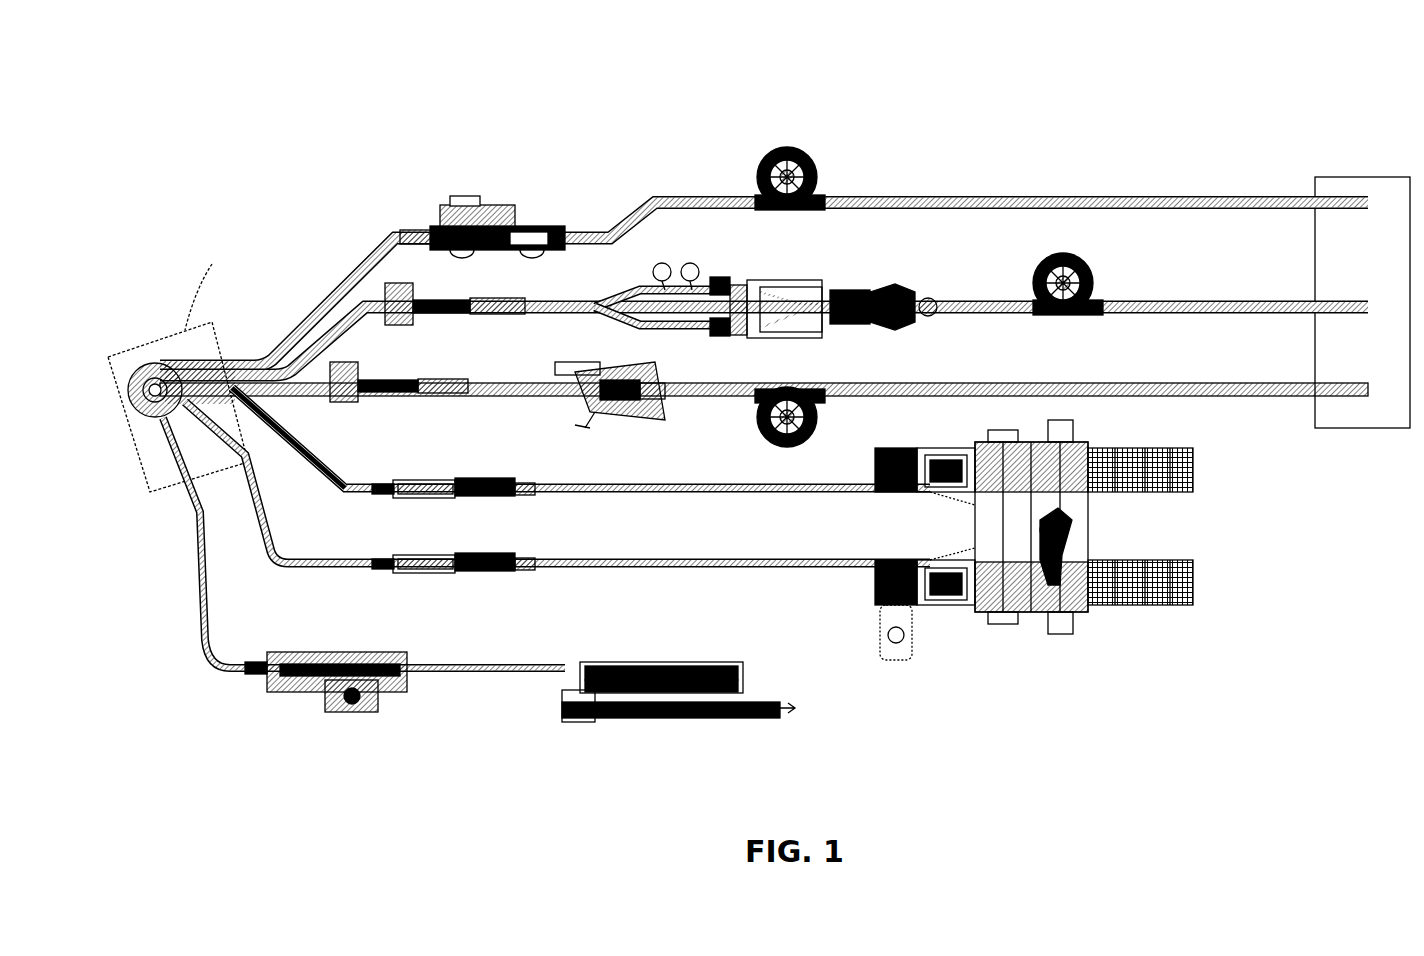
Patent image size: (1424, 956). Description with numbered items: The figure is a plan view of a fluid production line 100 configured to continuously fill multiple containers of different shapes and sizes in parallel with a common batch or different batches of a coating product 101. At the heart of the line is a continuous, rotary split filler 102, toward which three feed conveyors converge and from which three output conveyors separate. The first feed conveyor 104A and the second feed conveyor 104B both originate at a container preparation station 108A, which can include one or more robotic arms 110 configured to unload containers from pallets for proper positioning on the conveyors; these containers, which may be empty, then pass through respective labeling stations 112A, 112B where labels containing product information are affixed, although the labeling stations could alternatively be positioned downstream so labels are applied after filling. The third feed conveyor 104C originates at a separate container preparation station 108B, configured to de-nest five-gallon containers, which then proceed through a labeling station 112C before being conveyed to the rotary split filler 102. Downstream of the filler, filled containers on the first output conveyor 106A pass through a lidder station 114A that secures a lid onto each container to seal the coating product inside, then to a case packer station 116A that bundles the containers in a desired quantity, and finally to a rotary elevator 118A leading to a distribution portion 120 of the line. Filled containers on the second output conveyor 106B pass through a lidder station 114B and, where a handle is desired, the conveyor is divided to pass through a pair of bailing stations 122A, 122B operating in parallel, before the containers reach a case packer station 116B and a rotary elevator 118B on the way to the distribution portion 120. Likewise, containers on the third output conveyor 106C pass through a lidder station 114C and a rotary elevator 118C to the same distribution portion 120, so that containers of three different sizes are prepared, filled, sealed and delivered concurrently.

The fluid production line 100 is at (1060, 106).
The coating product 101 is at (140, 352).
The rotary split filler 102 is at (155, 362).
The first feed conveyor 104A is at (312, 470).
The second feed conveyor 104B is at (300, 575).
The third feed conveyor 104C is at (235, 678).
The first output conveyor 106A is at (280, 352).
The second output conveyor 106B is at (312, 332).
The third output conveyor 106C is at (350, 272).
The container preparation station 108A is at (1036, 618).
The container preparation station 108B is at (662, 722).
The robotic arms 110 is at (1092, 536).
The labeling station 112A is at (450, 482).
The labeling station 112B is at (450, 578).
The labeling station 112C is at (355, 712).
The lidder station 114A is at (380, 400).
The lidder station 114B is at (440, 316).
The lidder station 114C is at (497, 222).
The case packer station 116A is at (612, 420).
The case packer station 116B is at (786, 298).
The rotary elevator 118A is at (758, 438).
The rotary elevator 118B is at (1040, 268).
The rotary elevator 118C is at (785, 148).
The distribution portion 120 is at (1381, 268).
The bailing station 122A is at (680, 288).
The bailing station 122B is at (682, 332).